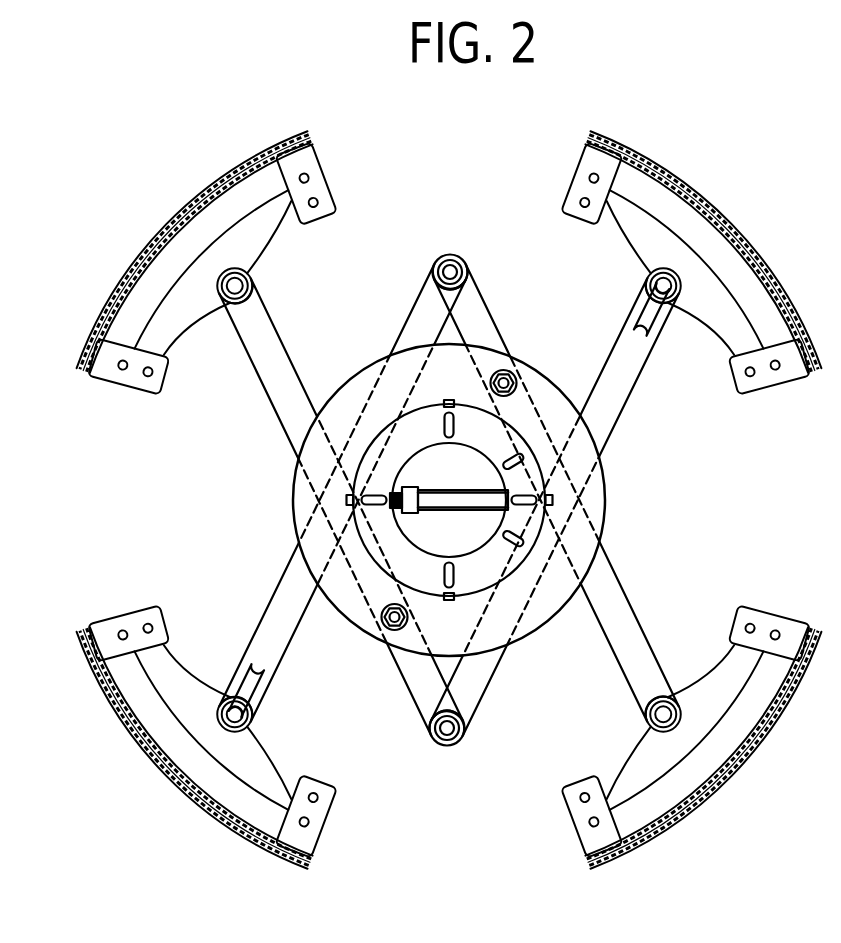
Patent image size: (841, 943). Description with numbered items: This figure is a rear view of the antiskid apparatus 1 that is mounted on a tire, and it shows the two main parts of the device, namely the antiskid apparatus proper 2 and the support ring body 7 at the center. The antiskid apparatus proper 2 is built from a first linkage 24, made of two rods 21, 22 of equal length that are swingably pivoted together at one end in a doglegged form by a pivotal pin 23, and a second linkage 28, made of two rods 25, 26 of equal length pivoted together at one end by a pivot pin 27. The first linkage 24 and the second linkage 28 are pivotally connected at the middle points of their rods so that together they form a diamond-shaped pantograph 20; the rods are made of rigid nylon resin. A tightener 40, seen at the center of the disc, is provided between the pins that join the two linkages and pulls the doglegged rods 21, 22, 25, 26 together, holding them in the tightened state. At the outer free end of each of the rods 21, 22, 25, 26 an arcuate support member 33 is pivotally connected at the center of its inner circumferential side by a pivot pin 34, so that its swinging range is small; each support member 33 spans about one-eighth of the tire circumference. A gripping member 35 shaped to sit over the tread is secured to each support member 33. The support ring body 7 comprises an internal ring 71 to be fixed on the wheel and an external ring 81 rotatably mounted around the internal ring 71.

The antiskid apparatus 1 is at (535, 149).
The antiskid apparatus proper 2 is at (138, 402).
The support ring body 7 is at (283, 485).
The pantograph 20 is at (638, 451).
The rod 21 is at (631, 604).
The rod 22 is at (270, 589).
The pivotal pin 23 is at (457, 263).
The first linkage 24 is at (404, 288).
The rod 25 is at (272, 403).
The rod 26 is at (634, 403).
The pivot pin 27 is at (451, 735).
The second linkage 28 is at (404, 727).
The arcuate support member 33 is at (713, 327).
The pivot pin 34 is at (649, 283).
The gripping member 35 is at (672, 178).
The tightener 40 is at (448, 510).
The internal ring 71 is at (494, 567).
The external ring 81 is at (594, 498).